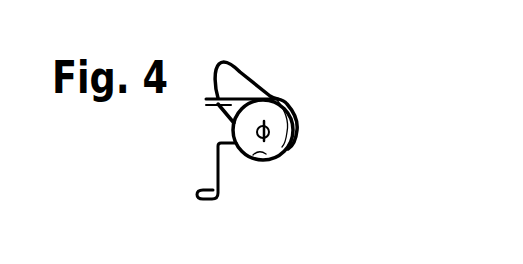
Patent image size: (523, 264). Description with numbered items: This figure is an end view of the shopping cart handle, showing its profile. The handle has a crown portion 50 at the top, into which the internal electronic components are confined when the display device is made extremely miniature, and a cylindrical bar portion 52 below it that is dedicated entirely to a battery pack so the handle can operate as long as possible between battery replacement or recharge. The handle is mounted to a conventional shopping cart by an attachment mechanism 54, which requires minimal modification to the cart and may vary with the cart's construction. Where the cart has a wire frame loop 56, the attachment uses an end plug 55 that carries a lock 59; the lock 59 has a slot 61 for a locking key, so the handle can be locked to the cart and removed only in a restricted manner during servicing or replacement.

The crown portion 50 is at (236, 68).
The cylindrical bar portion 52 is at (288, 151).
The attachment mechanism 54 is at (262, 160).
The end plug 55 is at (280, 138).
The wire frame loop 56 is at (216, 158).
The lock 59 is at (268, 127).
The slot 61 is at (257, 131).